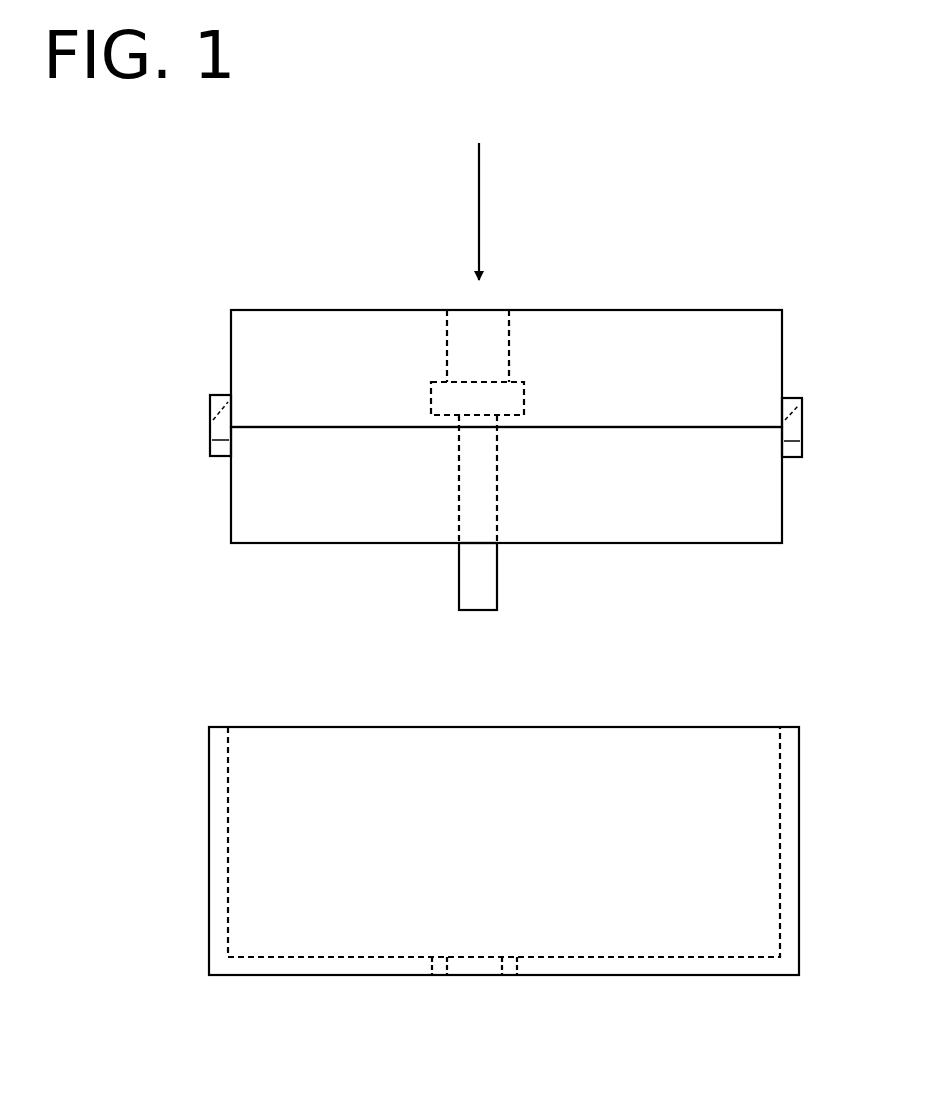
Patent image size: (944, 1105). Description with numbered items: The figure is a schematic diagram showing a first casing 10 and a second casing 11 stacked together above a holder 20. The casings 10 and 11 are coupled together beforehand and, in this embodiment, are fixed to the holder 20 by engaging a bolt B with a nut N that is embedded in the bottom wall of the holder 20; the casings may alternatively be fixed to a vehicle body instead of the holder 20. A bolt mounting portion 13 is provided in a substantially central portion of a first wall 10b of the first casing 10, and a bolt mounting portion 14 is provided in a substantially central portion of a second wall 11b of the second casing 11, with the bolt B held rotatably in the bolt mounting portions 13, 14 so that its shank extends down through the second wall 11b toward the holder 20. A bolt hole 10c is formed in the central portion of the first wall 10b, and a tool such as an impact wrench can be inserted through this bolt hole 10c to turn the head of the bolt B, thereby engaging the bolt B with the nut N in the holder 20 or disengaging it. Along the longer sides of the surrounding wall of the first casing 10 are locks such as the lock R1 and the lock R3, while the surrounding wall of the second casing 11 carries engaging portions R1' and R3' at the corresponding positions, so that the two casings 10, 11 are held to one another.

The first casing 10 is at (758, 356).
The first wall 10b is at (297, 310).
The bolt hole 10c is at (444, 348).
The second casing 11 is at (770, 503).
The second wall 11b is at (310, 545).
The bolt mounting portion 13 is at (519, 356).
The bolt mounting portion 14 is at (446, 500).
The holder 20 is at (760, 852).
The bolt B is at (485, 582).
The nut N is at (441, 976).
The lock R1 is at (181, 400).
The engaging portion R1' is at (172, 446).
The lock R3 is at (824, 407).
The engaging portion R3' is at (835, 440).